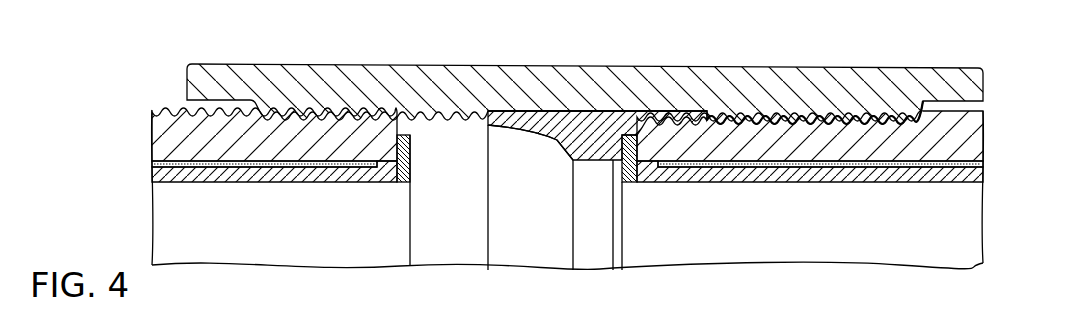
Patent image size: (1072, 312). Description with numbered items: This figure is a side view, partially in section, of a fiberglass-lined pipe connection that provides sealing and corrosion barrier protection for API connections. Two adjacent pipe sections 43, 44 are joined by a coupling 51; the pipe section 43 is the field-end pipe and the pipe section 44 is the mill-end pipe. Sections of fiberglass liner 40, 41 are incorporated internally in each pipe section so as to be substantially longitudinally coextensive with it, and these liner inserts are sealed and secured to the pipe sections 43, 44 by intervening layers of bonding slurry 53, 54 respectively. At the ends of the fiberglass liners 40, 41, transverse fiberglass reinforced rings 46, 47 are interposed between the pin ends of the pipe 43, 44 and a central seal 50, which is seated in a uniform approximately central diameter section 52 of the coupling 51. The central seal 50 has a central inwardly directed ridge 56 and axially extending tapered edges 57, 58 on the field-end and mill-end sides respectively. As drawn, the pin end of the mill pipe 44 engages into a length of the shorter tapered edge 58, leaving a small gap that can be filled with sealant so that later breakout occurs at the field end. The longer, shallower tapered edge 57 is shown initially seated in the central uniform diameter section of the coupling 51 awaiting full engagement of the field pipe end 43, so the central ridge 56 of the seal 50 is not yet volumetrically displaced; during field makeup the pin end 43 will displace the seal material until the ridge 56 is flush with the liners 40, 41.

The fiberglass liner 40 is at (322, 183).
The fiberglass liner 41 is at (853, 183).
The pipe section 43 is at (151, 138).
The pipe section 44 is at (983, 121).
The fiberglass reinforced ring 46 is at (411, 158).
The fiberglass reinforced ring 47 is at (614, 164).
The central seal 50 is at (610, 120).
The coupling 51 is at (421, 64).
The central diameter section 52 is at (597, 111).
The bonding slurry layer 53 is at (983, 183).
The bonding slurry layer 54 is at (262, 168).
The central ridge 56 is at (589, 163).
The tapered edge 57 is at (535, 134).
The tapered edge 58 is at (660, 120).